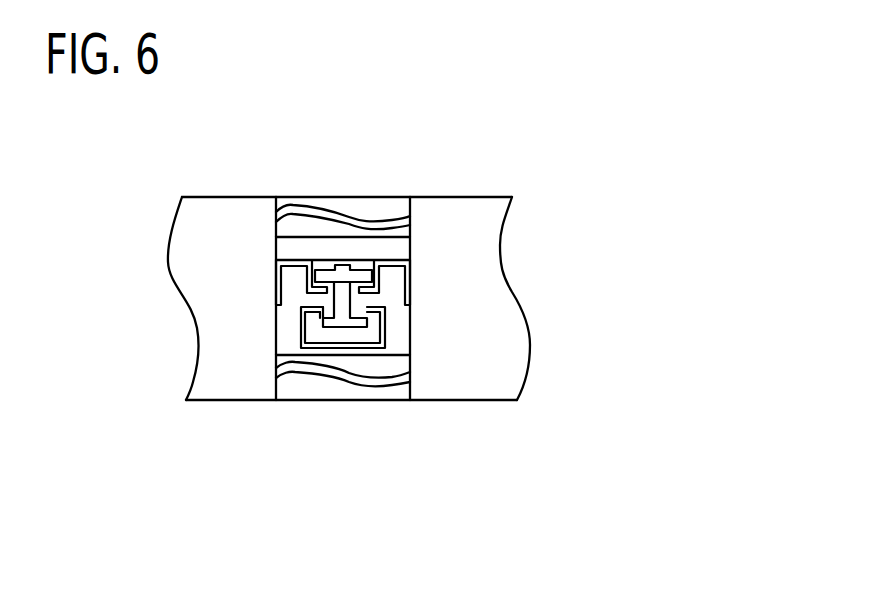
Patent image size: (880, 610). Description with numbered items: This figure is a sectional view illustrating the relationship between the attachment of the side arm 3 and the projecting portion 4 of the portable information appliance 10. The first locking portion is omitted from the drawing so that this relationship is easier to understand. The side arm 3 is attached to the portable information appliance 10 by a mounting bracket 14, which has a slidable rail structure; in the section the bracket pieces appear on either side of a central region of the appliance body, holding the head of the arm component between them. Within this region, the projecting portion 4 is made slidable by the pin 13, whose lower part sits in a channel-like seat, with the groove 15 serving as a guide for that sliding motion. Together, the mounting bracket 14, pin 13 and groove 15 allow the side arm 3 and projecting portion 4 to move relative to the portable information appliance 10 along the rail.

The portable information appliance 10 is at (471, 187).
The mounting bracket 14 is at (275, 283).
The side arm 3 is at (326, 279).
The pin 13 is at (322, 320).
The projecting portion 4 is at (378, 330).
The groove 15 is at (342, 326).